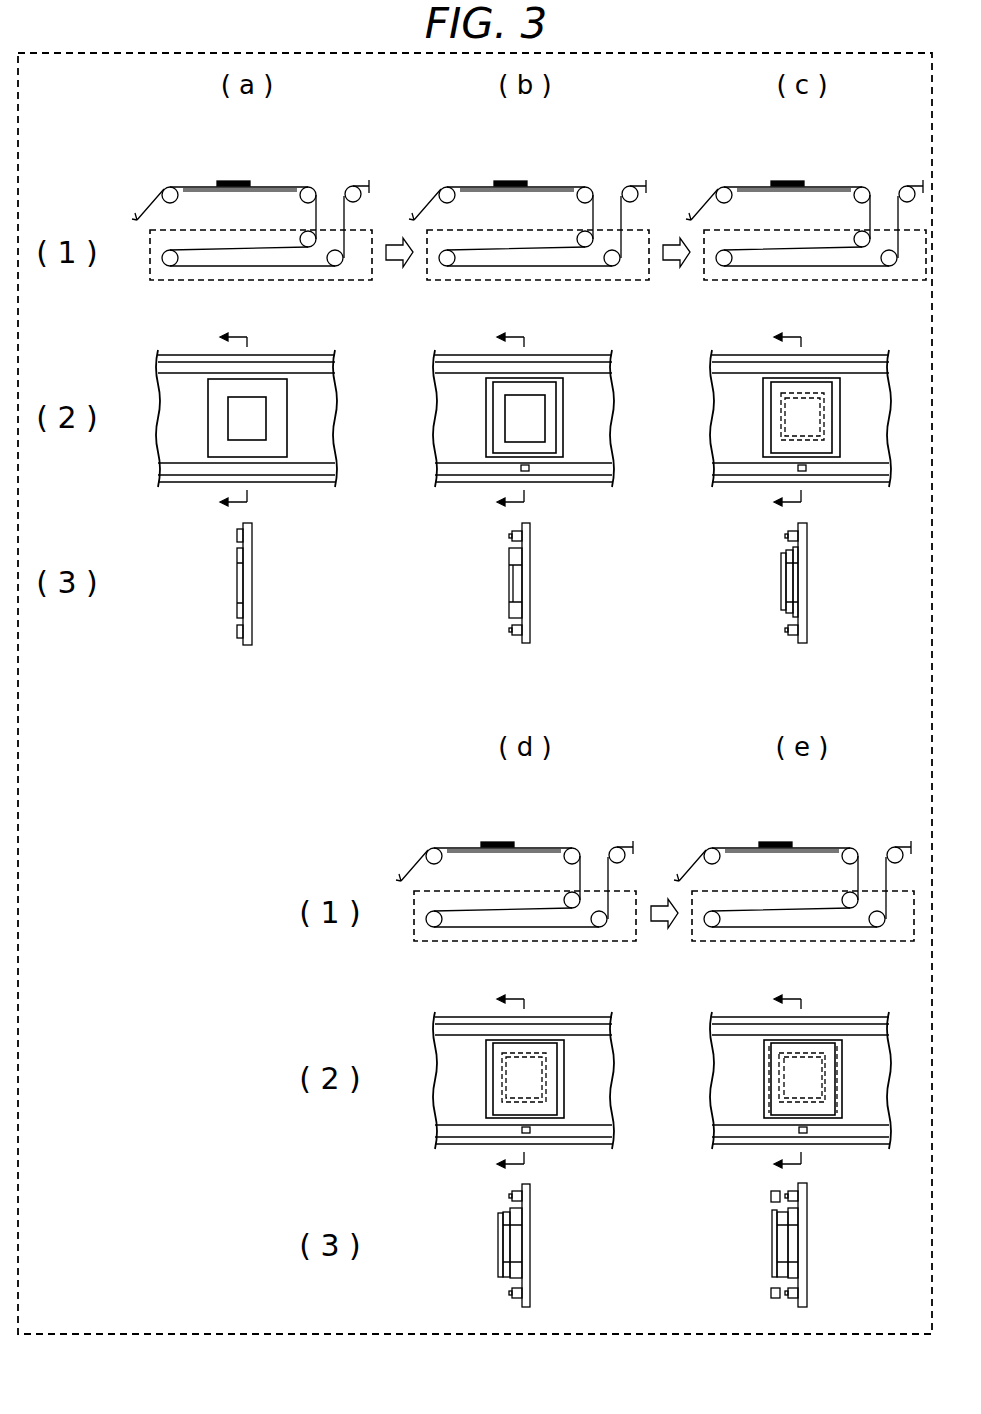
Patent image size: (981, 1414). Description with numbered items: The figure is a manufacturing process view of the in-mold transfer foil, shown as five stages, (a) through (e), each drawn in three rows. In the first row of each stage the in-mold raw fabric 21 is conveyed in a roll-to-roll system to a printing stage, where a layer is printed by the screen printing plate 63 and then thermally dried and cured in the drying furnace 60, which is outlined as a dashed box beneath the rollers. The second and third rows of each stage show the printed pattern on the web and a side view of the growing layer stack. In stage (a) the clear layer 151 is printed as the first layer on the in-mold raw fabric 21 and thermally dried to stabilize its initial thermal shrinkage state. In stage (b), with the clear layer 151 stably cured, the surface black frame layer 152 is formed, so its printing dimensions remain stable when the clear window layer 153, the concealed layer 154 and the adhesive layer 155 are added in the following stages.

The in-mold raw fabric 21 is at (148, 203).
The screen printing plate 63 is at (232, 181).
The drying furnace 60 is at (178, 283).
The clear layer 151 is at (237, 612).
The surface black frame layer 152 is at (509, 607).
The clear window layer 153 is at (781, 583).
The concealed layer 154 is at (500, 1267).
The adhesive layer 155 is at (771, 1245).